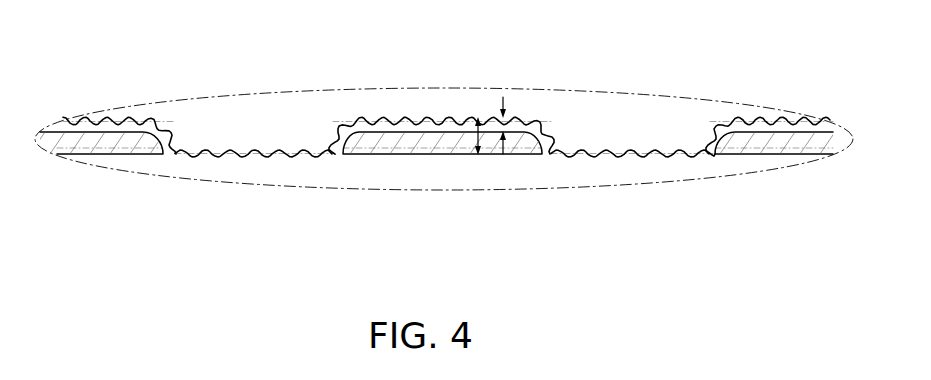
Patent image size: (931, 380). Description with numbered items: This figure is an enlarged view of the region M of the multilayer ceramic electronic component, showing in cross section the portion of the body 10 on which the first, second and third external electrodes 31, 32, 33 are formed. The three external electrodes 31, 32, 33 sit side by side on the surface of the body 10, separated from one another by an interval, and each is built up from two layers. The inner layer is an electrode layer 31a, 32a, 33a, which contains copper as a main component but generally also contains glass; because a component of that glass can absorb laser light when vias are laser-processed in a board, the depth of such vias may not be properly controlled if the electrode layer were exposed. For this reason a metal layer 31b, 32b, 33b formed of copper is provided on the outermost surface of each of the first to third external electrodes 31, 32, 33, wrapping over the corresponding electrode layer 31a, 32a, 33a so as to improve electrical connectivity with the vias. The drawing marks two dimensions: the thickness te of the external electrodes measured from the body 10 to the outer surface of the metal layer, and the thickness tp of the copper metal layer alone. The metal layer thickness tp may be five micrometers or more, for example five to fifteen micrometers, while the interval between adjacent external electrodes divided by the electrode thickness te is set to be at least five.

The electrode assembly body 10 is at (457, 177).
The region M is at (431, 288).
The first external electrode 31 is at (167, 38).
The electrode layer 31a is at (68, 138).
The metal layer 31b is at (132, 122).
The second external electrode 32 is at (850, 38).
The electrode layer 32a is at (827, 137).
The metal layer 32b is at (757, 128).
The third external electrode 33 is at (458, 38).
The electrode layer 33a is at (362, 133).
The metal layer 33b is at (425, 118).
The thickness of the external electrodes te is at (492, 124).
The thickness of the metal layer tp is at (512, 123).